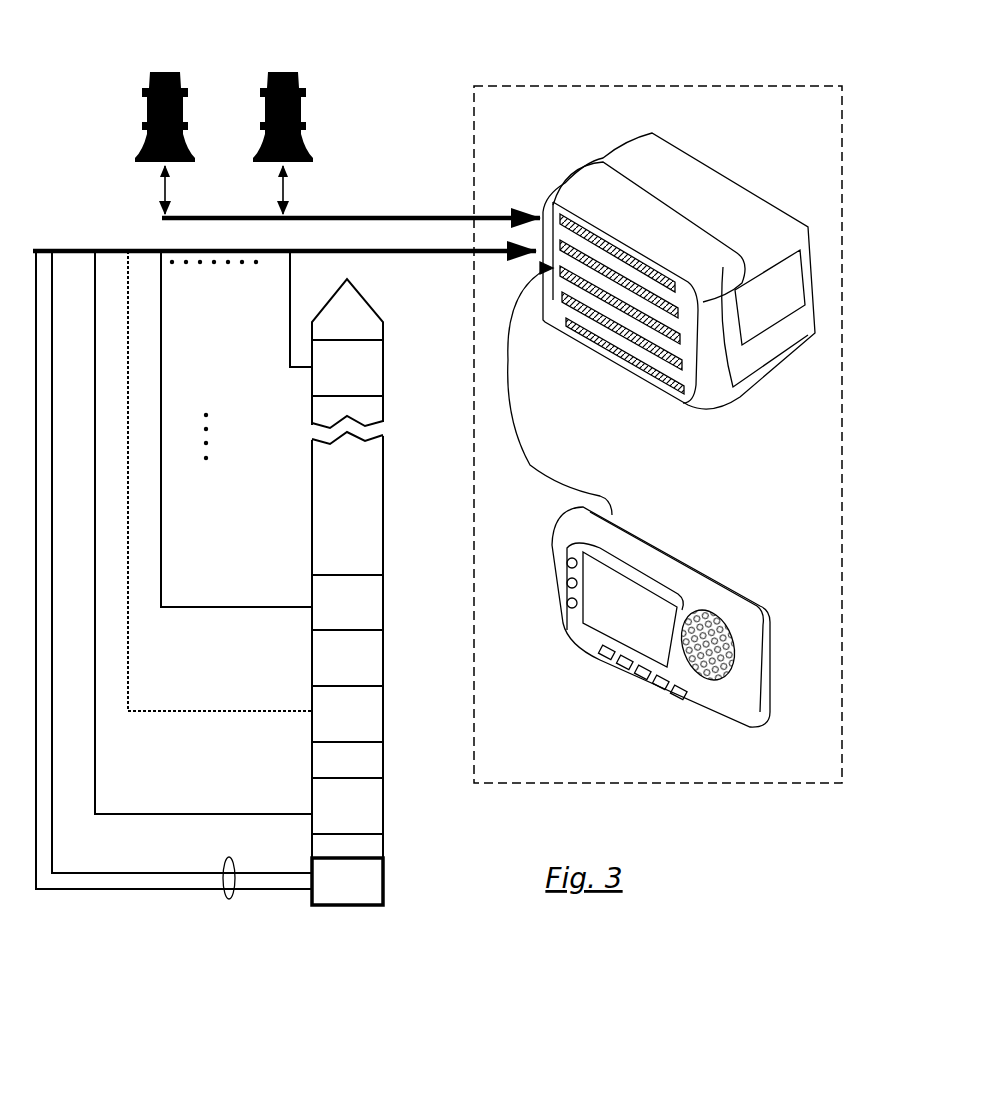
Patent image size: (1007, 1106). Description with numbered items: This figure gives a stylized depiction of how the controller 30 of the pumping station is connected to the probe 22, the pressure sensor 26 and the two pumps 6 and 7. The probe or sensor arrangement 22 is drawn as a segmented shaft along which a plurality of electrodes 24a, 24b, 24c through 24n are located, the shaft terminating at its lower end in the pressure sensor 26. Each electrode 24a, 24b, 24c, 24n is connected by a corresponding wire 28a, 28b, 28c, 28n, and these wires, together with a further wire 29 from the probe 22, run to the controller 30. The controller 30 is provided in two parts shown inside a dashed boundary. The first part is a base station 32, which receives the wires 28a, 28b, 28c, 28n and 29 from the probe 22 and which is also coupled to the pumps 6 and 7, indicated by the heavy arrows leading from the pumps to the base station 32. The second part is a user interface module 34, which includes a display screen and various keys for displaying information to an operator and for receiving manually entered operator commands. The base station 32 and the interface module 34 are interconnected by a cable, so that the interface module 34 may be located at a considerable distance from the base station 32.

The pump 6 is at (285, 72).
The pump 7 is at (163, 72).
The probe 22 is at (280, 942).
The electrode 24a is at (393, 818).
The electrode 24b is at (393, 715).
The electrode 24c is at (393, 608).
The electrode 24n is at (395, 352).
The pressure sensor 26 is at (347, 881).
The wire 28a is at (167, 814).
The wire 28b is at (196, 711).
The wire 28c is at (234, 607).
The wire 28n is at (290, 293).
The wire 29 is at (229, 902).
The controller 30 is at (470, 182).
The base station 32 is at (708, 403).
The user interface module 34 is at (610, 662).